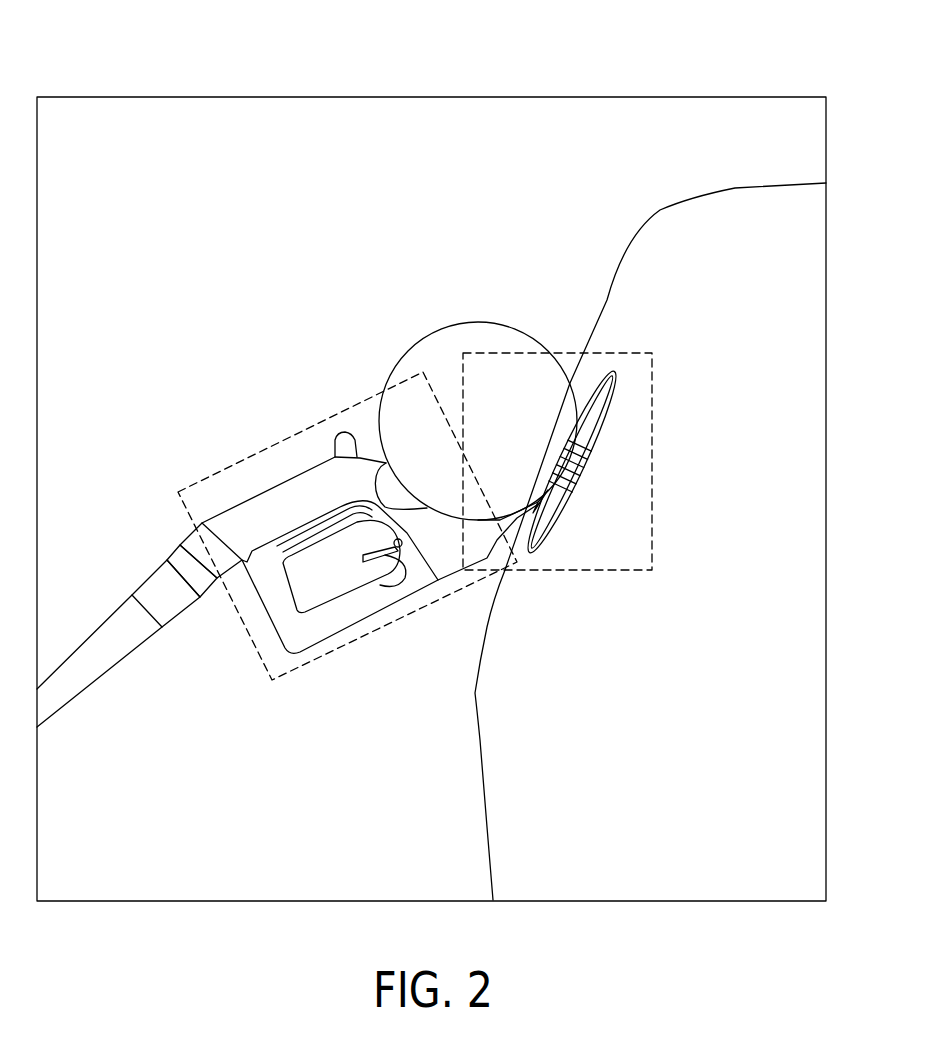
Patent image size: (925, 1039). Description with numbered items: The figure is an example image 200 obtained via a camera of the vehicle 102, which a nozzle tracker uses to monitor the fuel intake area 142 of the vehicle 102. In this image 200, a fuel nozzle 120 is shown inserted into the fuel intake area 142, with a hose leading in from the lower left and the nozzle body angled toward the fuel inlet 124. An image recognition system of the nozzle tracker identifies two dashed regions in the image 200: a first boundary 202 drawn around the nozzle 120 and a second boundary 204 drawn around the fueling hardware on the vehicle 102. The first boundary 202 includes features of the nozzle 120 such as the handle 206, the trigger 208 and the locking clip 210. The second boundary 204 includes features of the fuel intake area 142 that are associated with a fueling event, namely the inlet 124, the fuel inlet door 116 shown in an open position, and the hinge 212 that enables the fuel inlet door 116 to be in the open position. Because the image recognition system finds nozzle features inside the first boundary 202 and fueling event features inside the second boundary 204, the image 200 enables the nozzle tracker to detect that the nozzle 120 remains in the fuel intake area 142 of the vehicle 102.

The image 200 is at (672, 52).
The vehicle 102 is at (735, 188).
The fuel intake area 142 is at (513, 230).
The fuel inlet door 116 is at (478, 322).
The nozzle 120 is at (292, 549).
The handle 206 is at (262, 490).
The trigger 208 is at (345, 507).
The locking clip 210 is at (380, 582).
The first boundary 202 is at (253, 650).
The second boundary 204 is at (592, 570).
The inlet 124 is at (637, 462).
The hinge 212 is at (575, 470).